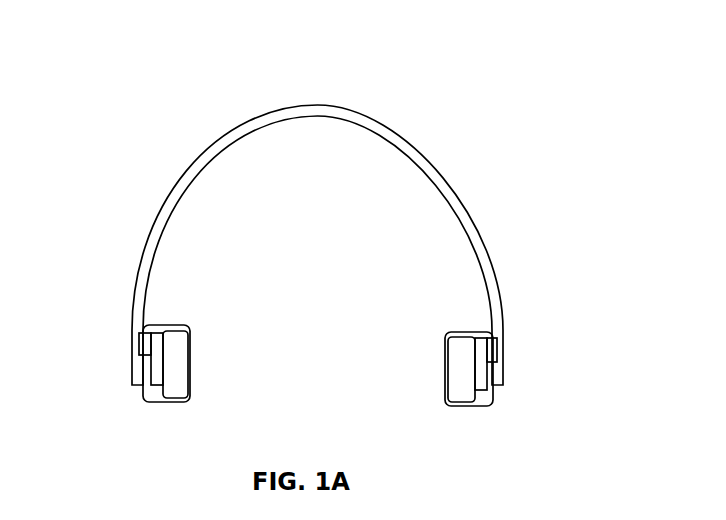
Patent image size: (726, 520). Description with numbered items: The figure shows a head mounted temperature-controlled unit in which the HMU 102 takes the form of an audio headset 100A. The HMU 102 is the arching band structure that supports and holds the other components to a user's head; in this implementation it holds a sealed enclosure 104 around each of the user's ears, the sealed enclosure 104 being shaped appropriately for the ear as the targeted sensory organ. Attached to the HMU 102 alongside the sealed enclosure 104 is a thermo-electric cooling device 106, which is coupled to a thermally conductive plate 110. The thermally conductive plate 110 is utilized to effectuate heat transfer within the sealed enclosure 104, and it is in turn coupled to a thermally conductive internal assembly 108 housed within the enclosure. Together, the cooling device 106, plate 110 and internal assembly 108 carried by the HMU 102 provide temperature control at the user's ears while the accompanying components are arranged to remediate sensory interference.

The audio headset 100A is at (540, 73).
The HMU 102 is at (219, 144).
The sealed enclosure 104 is at (144, 325).
The thermo-electric cooling device 106 is at (139, 343).
The thermally conductive internal assembly 108 is at (161, 396).
The thermally conductive plate 110 is at (158, 355).